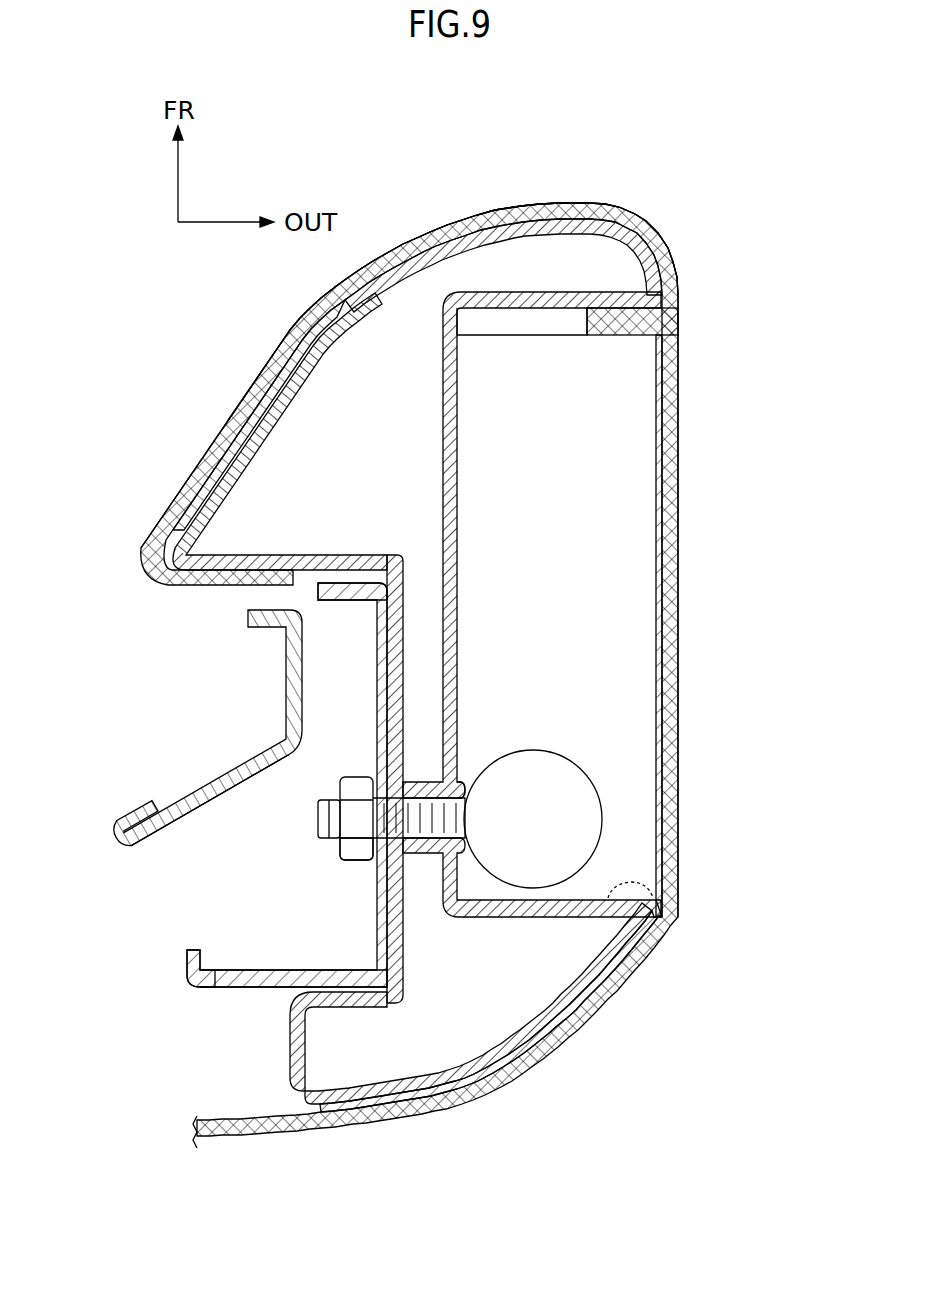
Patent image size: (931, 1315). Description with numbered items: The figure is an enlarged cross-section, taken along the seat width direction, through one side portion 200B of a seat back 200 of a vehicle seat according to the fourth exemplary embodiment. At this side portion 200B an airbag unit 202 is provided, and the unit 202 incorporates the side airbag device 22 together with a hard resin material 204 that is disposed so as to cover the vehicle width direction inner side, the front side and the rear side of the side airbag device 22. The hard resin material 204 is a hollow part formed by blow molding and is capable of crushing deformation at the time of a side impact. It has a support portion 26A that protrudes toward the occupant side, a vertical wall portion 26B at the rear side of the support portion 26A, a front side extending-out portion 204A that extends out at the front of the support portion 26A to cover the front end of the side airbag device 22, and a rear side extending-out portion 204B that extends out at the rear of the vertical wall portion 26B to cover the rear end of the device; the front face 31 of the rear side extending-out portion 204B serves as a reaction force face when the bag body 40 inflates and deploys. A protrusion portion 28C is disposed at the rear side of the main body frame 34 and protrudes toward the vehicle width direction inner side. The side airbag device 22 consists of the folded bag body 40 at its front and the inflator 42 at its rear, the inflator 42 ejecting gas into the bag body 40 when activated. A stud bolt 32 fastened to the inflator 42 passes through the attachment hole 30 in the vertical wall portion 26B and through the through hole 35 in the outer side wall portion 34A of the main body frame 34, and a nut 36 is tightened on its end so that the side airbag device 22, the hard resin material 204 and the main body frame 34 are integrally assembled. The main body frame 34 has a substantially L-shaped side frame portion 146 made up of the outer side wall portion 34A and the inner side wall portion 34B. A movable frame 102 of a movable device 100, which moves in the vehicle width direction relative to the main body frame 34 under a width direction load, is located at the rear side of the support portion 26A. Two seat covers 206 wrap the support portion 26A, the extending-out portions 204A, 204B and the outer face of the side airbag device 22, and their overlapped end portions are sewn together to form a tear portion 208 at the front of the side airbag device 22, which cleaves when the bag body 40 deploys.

The side airbag device 22 is at (553, 330).
The support portion 26A is at (318, 325).
The vertical wall portion 26B is at (370, 700).
The protrusion portion 28C is at (332, 977).
The attachment hole 30 is at (468, 790).
The front face 31 is at (675, 898).
The stud bolt 32 is at (320, 822).
The main body frame 34 is at (285, 970).
The outer side wall portion 34A is at (372, 655).
The inner side wall portion 34B is at (230, 970).
The through hole 35 is at (362, 805).
The nut 36 is at (357, 858).
The bag body 40 is at (682, 483).
The inflator 42 is at (562, 752).
The movable device 100 is at (229, 729).
The movable frame 102 is at (207, 786).
The side frame portion 146 is at (252, 988).
The seat back 200 is at (385, 1146).
The side portion 200B is at (415, 238).
The airbag unit 202 is at (468, 187).
The hard resin material 204 is at (258, 393).
The front side extending-out portion 204A is at (513, 310).
The rear side extending-out portion 204B is at (575, 895).
The seat cover 206 is at (210, 440).
The tear portion 208 is at (678, 316).